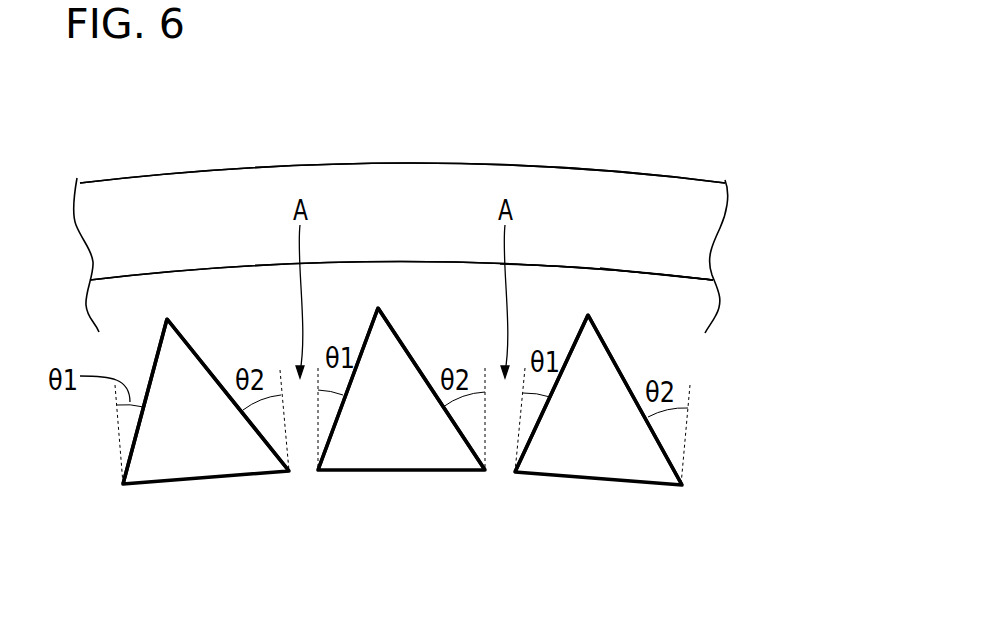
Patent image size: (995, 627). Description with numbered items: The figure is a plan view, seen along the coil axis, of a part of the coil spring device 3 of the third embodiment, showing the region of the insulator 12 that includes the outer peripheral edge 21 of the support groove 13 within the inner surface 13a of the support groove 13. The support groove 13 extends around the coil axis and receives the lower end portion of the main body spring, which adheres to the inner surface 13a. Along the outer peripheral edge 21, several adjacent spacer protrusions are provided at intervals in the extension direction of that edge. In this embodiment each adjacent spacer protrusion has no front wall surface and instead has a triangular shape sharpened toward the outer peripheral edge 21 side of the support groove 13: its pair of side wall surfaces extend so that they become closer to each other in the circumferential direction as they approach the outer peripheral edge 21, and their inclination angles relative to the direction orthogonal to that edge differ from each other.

The coil spring device 3 is at (692, 102).
The insulator 12 is at (197, 168).
The support groove 13 is at (618, 268).
The inner surface of the support groove 13a is at (568, 290).
The outer peripheral edge 21 is at (660, 272).